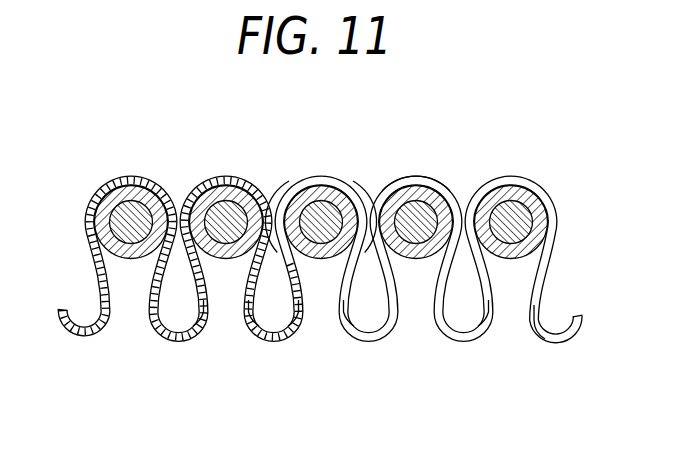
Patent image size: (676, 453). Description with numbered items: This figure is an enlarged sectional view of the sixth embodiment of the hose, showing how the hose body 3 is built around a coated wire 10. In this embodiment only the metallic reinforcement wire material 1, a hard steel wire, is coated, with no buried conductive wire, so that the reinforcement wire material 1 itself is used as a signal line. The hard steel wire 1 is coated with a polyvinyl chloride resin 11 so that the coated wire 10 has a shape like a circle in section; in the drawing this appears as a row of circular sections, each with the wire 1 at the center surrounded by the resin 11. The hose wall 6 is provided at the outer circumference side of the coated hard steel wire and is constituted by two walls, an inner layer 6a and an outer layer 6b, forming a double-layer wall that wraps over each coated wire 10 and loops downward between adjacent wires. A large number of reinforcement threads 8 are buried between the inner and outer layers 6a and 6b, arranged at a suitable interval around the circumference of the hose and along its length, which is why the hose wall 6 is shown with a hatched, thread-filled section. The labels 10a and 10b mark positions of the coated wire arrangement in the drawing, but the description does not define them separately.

The reinforcement wire material 1 is at (510, 218).
The hose body 3 is at (104, 165).
The hose wall 6 is at (423, 178).
The inner layer 6a is at (288, 186).
The outer layer 6b is at (346, 184).
The reinforcement threads 8 is at (308, 183).
The coated wire 10 is at (509, 320).
The first opening between loops 10a is at (225, 318).
The second opening between loops 10b is at (320, 318).
The polyvinyl chloride resin 11 is at (413, 260).